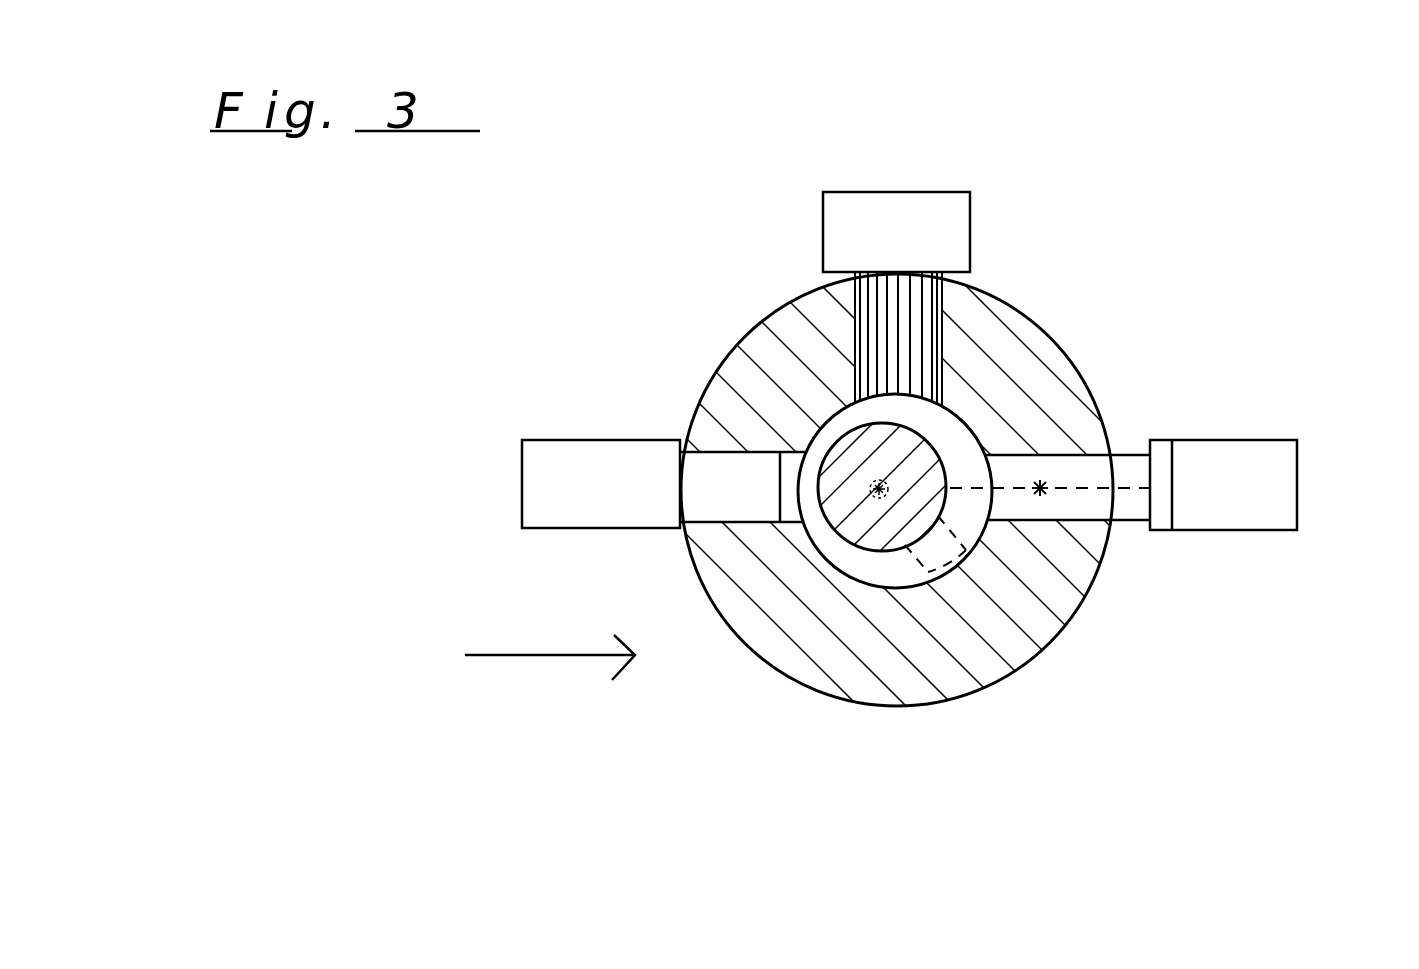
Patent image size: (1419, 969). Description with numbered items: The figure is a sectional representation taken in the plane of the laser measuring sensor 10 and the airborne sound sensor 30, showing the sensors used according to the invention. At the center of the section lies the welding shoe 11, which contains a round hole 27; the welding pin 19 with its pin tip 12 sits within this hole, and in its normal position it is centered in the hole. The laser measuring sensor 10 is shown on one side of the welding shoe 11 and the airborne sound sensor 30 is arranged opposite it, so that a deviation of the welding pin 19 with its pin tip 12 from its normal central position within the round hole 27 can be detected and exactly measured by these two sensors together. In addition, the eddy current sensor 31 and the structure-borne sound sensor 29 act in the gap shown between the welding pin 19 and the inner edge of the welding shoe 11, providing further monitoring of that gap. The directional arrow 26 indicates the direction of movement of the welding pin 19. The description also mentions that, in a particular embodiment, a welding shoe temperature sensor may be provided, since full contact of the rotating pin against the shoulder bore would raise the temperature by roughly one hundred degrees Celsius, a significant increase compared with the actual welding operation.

The laser measuring sensor 10 is at (1218, 498).
The welding shoe 11 is at (1058, 634).
The pin tip 12 is at (883, 493).
The welding pin 19 is at (932, 450).
The directional arrow 26 is at (520, 657).
The round hole 27 is at (835, 414).
The structure-borne sound sensor 29 is at (943, 557).
The airborne sound sensor 30 is at (645, 468).
The eddy current sensor 31 is at (890, 228).